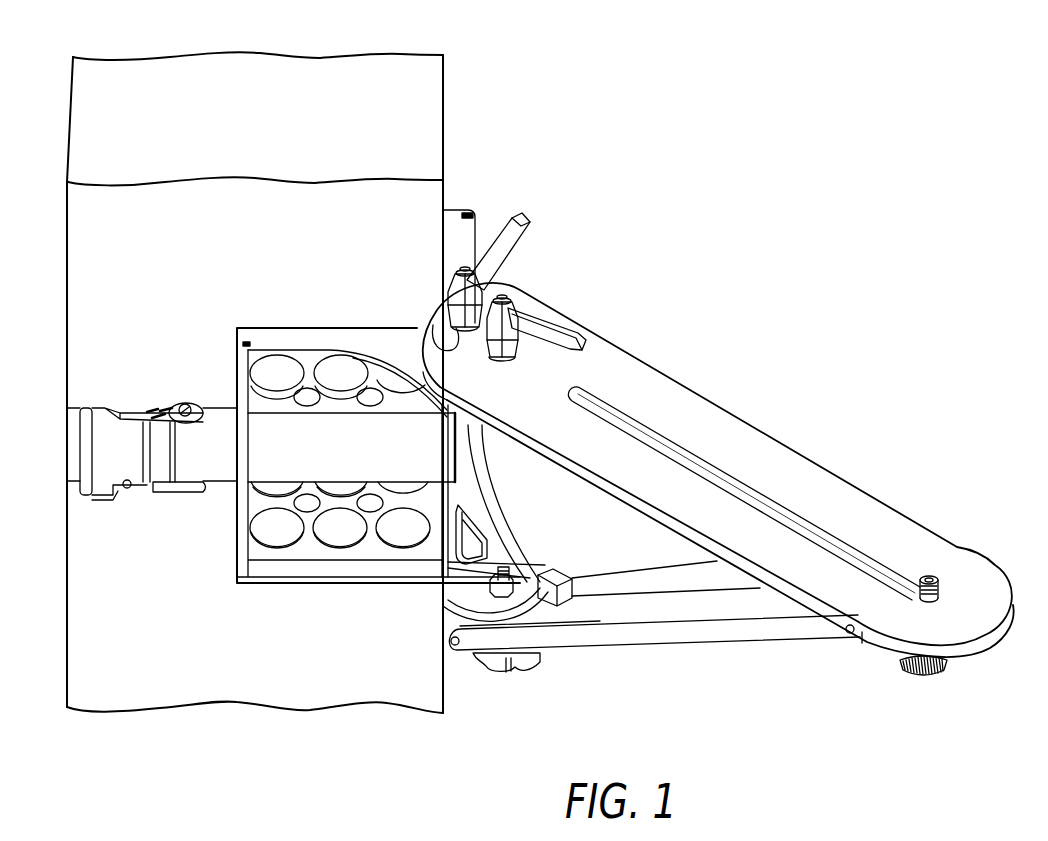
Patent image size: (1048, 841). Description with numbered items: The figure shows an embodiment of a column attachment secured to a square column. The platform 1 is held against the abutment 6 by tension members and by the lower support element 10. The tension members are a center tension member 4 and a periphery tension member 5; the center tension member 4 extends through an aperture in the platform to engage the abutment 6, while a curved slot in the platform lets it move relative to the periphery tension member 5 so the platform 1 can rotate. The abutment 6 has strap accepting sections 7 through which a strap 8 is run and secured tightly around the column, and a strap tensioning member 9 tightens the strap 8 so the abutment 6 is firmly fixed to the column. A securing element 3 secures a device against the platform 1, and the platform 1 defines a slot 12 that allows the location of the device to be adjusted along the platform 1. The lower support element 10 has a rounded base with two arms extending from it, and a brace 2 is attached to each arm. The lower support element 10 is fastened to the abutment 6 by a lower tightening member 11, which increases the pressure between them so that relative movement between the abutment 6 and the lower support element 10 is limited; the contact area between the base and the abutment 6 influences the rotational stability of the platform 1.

The platform 1 is at (763, 457).
The brace 2 is at (670, 640).
The securing element 3 is at (930, 670).
The center tension member 4 is at (562, 325).
The periphery tension member 5 is at (517, 217).
The abutment 6 is at (370, 586).
The strap accepting section 7 is at (240, 450).
The strap 8 is at (220, 420).
The strap tensioning member 9 is at (152, 493).
The lower support element 10 is at (552, 572).
The lower tightening member 11 is at (510, 670).
The slot 12 is at (850, 550).